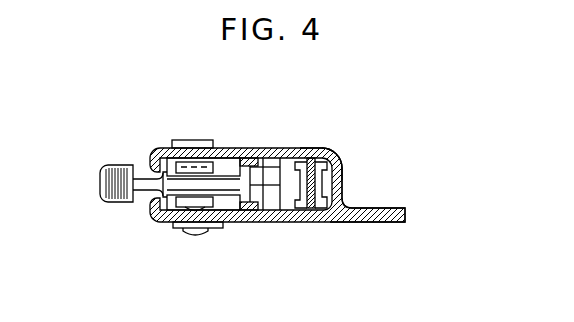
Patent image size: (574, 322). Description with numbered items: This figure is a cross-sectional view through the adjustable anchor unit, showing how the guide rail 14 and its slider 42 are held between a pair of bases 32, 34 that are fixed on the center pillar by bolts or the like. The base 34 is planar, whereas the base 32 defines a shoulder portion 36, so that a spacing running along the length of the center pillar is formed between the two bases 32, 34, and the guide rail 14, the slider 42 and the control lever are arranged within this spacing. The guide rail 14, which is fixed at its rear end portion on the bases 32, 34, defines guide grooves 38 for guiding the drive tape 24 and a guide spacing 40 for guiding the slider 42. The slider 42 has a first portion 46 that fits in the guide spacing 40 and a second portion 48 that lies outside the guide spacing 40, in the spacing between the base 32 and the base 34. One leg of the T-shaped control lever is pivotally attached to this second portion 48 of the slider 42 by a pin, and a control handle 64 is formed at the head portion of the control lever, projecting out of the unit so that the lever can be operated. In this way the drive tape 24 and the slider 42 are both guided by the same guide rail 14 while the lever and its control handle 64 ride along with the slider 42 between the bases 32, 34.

The guide rail 14 is at (293, 147).
The drive tape 24 is at (345, 195).
The base 32 is at (263, 150).
The base 34 is at (252, 224).
The shoulder portion 36 is at (342, 164).
The guide grooves 38 is at (315, 147).
The guide spacing 40 is at (300, 224).
The slider 42 is at (225, 150).
The first portion 46 is at (273, 197).
The second portion 48 is at (222, 229).
The control handle 64 is at (113, 165).